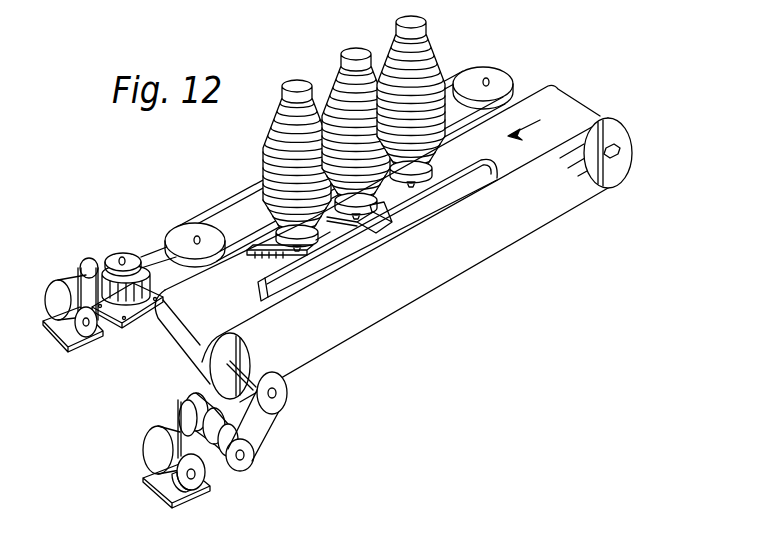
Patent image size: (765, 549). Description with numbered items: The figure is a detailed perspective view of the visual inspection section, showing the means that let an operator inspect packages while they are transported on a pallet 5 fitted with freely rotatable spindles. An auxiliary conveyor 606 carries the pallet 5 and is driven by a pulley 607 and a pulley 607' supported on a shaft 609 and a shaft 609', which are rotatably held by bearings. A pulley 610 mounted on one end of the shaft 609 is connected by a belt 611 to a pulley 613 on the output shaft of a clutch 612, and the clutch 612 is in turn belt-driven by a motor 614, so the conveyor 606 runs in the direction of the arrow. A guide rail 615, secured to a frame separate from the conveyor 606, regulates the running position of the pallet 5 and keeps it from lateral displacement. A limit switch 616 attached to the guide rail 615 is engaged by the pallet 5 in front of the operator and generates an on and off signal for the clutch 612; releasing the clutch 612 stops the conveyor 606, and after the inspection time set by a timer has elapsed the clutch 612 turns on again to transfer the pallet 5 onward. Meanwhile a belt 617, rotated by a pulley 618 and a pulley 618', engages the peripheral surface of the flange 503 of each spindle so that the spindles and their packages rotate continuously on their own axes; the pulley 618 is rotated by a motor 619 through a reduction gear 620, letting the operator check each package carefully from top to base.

The pallet 5 is at (258, 250).
The flange 503 is at (322, 237).
The auxiliary conveyor 606 is at (396, 231).
The pulley 607 is at (190, 366).
The pulley 607' is at (602, 180).
The shaft 609 is at (266, 356).
The shaft 609' is at (633, 180).
The pulley 610 is at (288, 386).
The belt 611 is at (270, 439).
The clutch 612 is at (220, 470).
The pulley 613 is at (253, 466).
The motor 614 is at (143, 442).
The guide rail 615 is at (467, 179).
The limit switch 616 is at (383, 224).
The belt 617 is at (218, 206).
The pulley 618 is at (177, 229).
The pulley 618' is at (500, 73).
The motor 619 is at (58, 285).
The reduction gear 620 is at (137, 322).